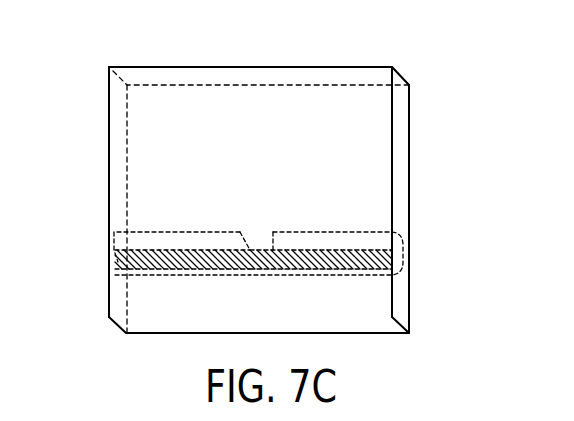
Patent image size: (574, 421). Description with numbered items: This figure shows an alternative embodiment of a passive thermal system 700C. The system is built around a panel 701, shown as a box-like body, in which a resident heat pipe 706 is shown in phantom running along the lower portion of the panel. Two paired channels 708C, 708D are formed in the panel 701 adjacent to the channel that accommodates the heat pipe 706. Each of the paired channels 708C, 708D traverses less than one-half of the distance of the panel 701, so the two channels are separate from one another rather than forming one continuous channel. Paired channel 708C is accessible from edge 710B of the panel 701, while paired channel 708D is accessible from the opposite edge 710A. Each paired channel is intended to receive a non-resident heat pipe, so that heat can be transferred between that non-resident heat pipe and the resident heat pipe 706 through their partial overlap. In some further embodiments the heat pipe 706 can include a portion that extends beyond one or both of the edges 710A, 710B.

The passive thermal system embodiment 700C is at (269, 180).
The panel 701 is at (243, 88).
The heat pipe 706 is at (257, 248).
The paired channel 708C is at (177, 232).
The paired channel 708D is at (325, 232).
The edge 710A is at (405, 164).
The edge 710B is at (112, 162).